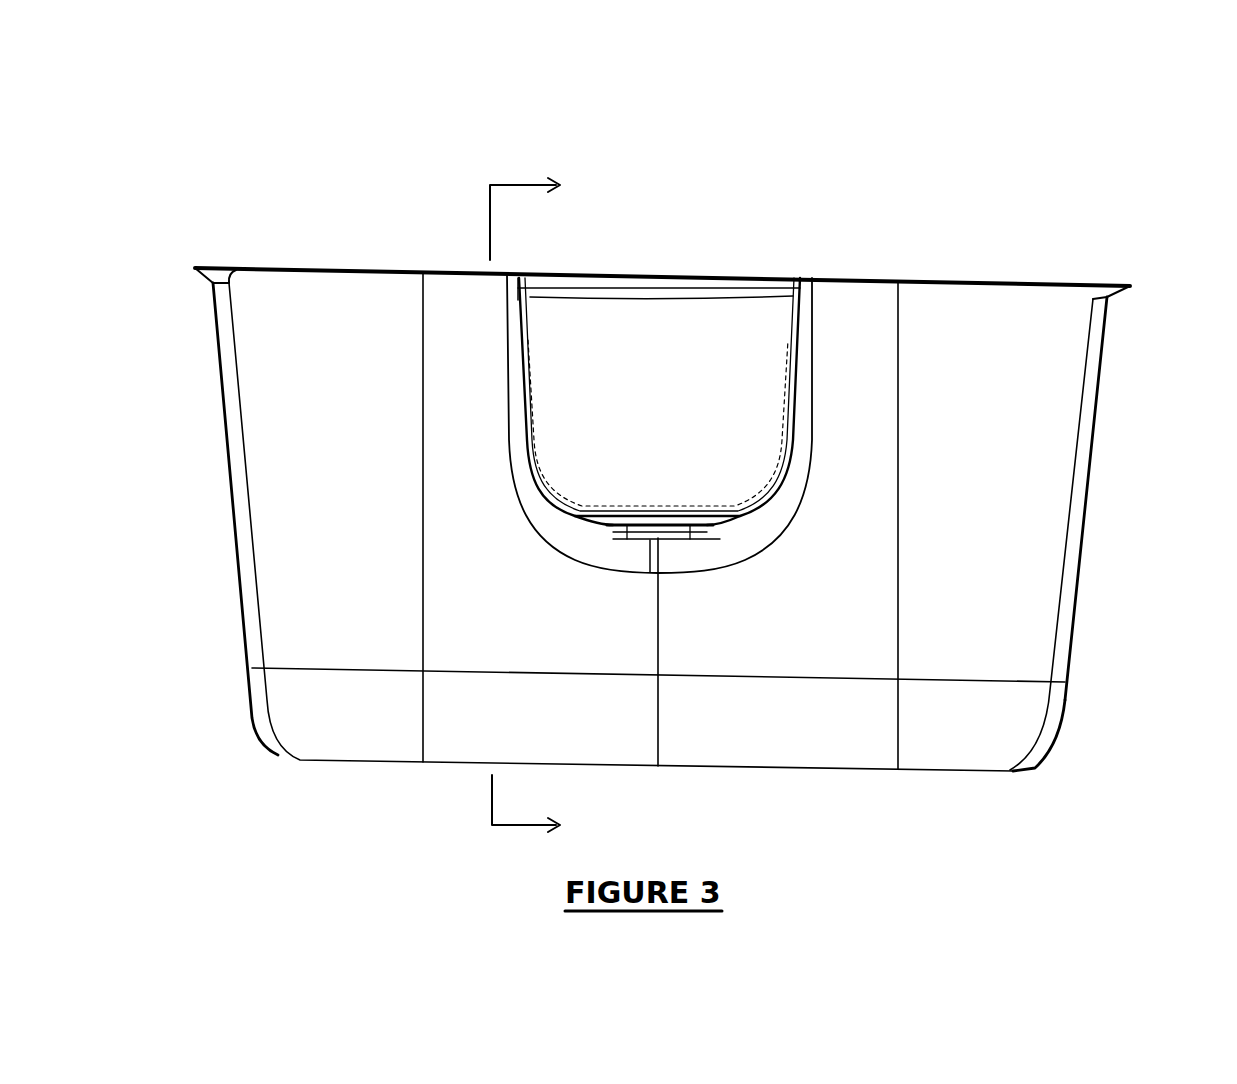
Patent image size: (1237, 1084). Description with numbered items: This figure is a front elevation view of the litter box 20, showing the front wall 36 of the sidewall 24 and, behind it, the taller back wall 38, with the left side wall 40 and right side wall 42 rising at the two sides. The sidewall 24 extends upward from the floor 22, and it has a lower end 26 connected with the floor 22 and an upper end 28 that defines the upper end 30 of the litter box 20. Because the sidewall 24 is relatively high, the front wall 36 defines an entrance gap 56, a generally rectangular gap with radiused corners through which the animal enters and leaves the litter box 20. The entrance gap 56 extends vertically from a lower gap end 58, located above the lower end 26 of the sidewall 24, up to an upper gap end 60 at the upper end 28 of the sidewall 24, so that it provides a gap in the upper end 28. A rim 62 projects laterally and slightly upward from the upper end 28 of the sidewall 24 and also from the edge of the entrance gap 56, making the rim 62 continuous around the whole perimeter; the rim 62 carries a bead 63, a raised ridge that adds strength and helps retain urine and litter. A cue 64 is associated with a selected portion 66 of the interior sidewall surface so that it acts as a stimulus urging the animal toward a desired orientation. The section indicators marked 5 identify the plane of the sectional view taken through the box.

The litter box 20 is at (1177, 195).
The floor 22 is at (826, 772).
The sidewall 24 is at (1033, 583).
The lower end 26 is at (1048, 752).
The upper end 28 is at (1110, 298).
The upper end 30 is at (992, 283).
The front wall 36 is at (1037, 463).
The back wall 38 is at (753, 380).
The left side wall 40 is at (236, 518).
The right side wall 42 is at (1083, 527).
The entrance gap 56 is at (707, 530).
The lower gap end 58 is at (650, 572).
The upper gap end 60 is at (528, 303).
The rim 62 is at (210, 278).
The bead 63 is at (195, 268).
The cue 64 is at (668, 290).
The selected portion 66 is at (657, 383).
The section line 5- 5 is at (540, 505).